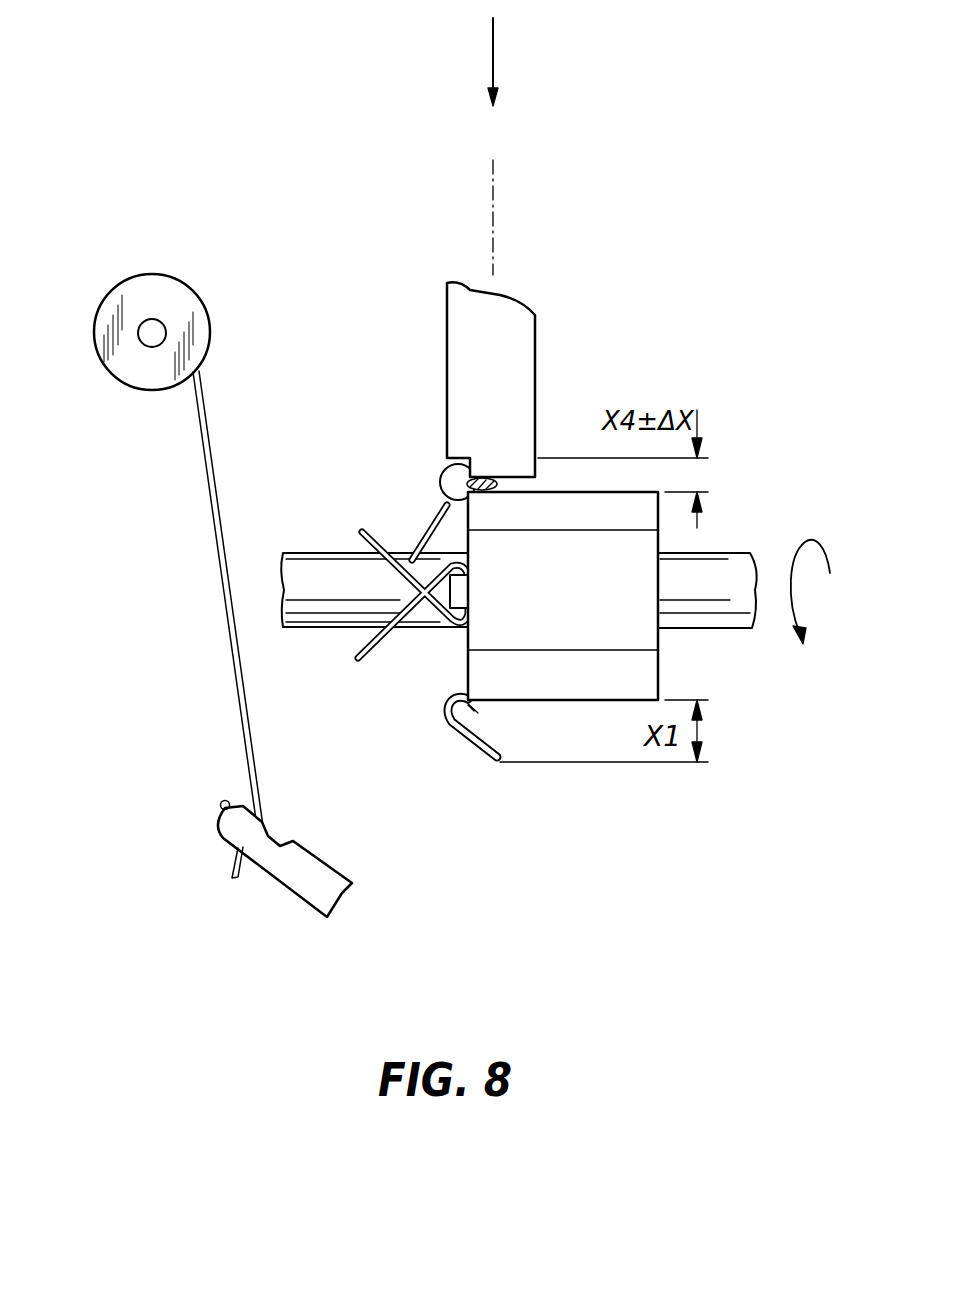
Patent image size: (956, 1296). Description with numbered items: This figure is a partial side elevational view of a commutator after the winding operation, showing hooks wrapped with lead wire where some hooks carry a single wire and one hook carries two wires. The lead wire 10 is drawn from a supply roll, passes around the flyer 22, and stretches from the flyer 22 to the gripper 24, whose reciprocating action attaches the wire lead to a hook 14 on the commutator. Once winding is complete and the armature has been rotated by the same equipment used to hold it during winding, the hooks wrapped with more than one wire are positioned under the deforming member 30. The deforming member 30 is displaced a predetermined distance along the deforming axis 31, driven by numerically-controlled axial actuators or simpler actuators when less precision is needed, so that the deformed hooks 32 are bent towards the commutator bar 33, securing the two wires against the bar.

The lead wire 10 is at (237, 674).
The hook 14 is at (510, 610).
The flyer 22 is at (130, 378).
The gripper 24 is at (305, 885).
The deforming member 30 is at (447, 382).
The deforming axis 31 is at (493, 226).
The deformed hooks 32 is at (456, 479).
The commutator bar 33 is at (616, 583).